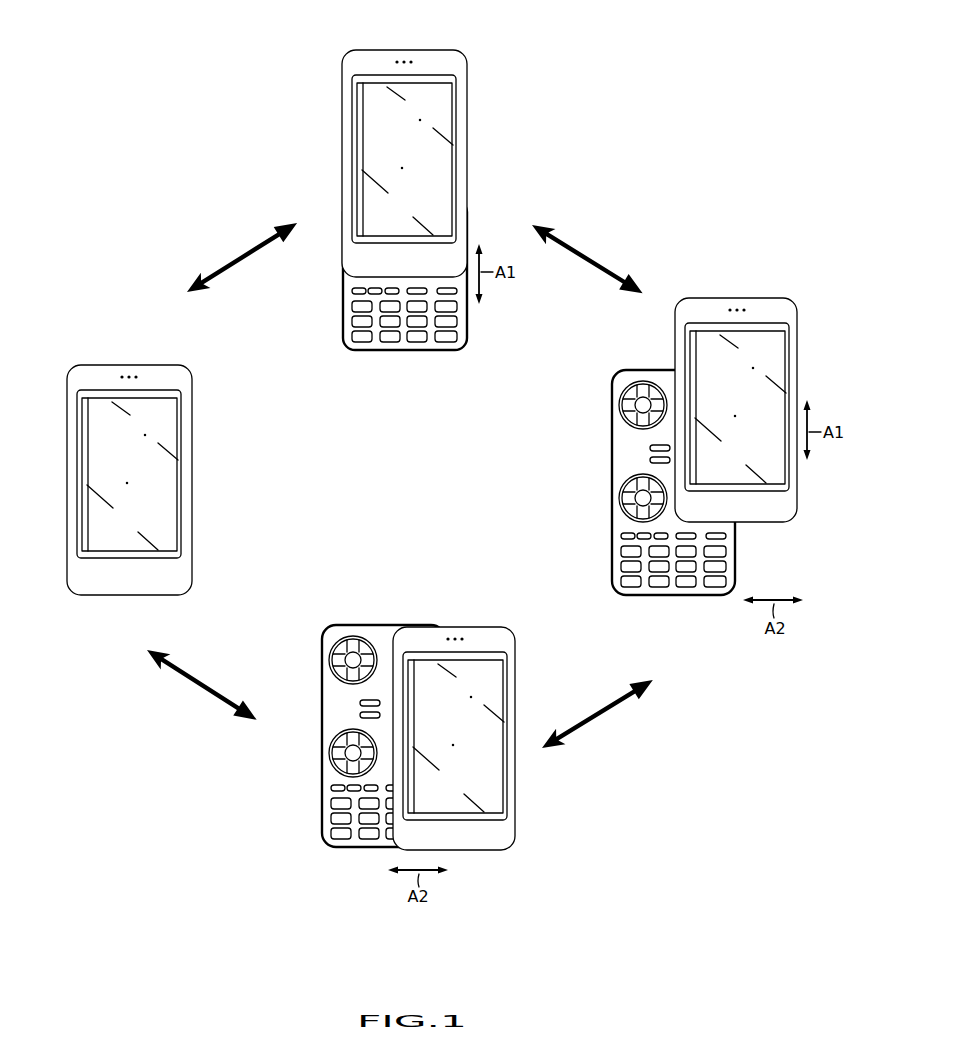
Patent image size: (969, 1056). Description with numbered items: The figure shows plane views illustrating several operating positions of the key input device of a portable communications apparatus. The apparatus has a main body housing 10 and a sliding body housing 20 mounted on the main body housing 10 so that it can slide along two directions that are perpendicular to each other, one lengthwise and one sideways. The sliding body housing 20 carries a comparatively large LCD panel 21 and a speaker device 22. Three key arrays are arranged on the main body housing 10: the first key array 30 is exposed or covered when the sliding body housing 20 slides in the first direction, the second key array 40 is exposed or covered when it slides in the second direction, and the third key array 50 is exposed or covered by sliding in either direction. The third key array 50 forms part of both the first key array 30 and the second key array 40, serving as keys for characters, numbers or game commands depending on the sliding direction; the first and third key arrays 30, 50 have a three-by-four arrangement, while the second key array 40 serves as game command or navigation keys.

The main body housing 10 is at (343, 350).
The sliding body housing 20 is at (444, 50).
The LCD panel 21 is at (447, 101).
The speaker device 22 is at (405, 57).
The first key array 30 is at (353, 381).
The second key array 40 is at (288, 625).
The third key array 50 is at (339, 282).